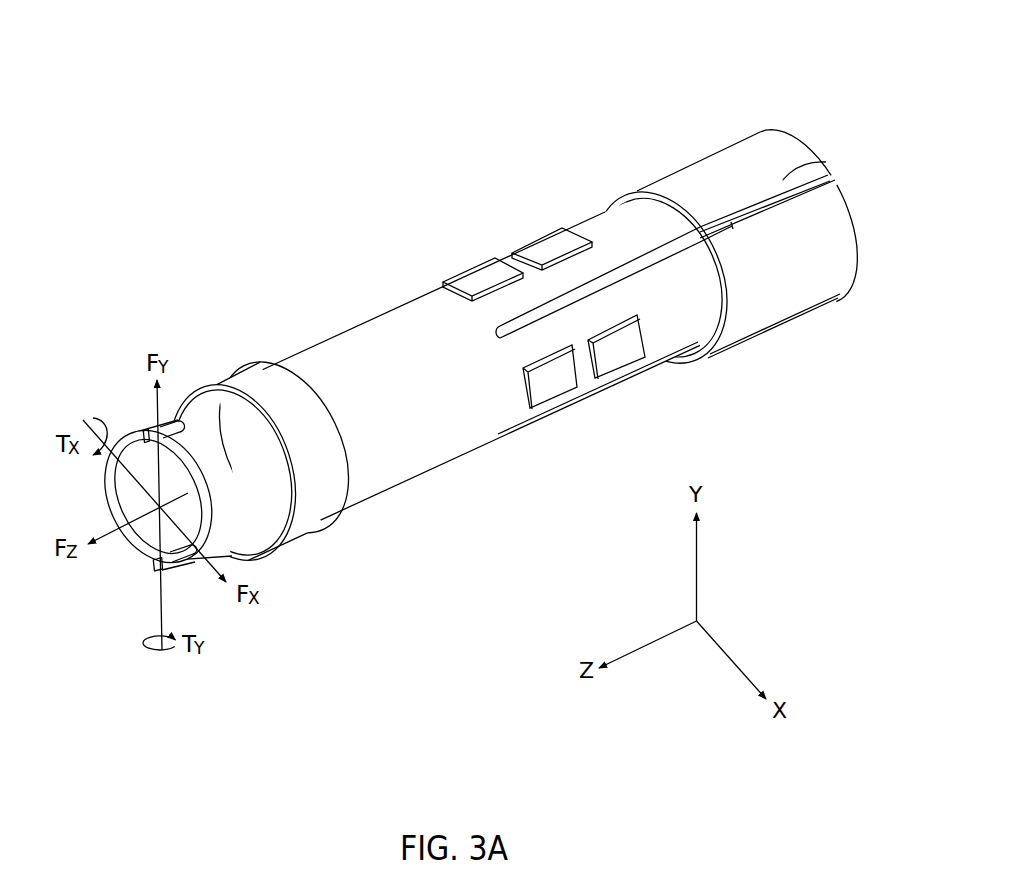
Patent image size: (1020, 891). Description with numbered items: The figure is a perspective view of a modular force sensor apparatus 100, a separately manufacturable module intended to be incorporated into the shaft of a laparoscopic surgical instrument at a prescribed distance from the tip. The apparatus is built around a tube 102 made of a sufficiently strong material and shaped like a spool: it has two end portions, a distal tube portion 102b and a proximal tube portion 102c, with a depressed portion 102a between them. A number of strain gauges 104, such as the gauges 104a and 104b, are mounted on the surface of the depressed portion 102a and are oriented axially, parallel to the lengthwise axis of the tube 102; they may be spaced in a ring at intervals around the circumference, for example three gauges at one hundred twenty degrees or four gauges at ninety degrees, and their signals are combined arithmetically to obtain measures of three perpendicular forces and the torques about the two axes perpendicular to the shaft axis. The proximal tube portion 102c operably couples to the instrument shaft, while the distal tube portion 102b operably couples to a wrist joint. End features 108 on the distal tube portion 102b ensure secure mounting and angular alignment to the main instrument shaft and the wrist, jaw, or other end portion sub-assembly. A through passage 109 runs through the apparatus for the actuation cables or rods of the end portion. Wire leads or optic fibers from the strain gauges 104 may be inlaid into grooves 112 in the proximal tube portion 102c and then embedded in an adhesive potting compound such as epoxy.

The modular force sensor apparatus 100 is at (507, 102).
The tube 102 is at (457, 364).
The depressed portion 102a is at (407, 482).
The distal tube portion 102b is at (316, 530).
The proximal tube portion 102c is at (778, 345).
The strain gauges 104 is at (543, 247).
The strain gauge 104a is at (475, 278).
The strain gauge 104b is at (547, 388).
The end features 108 is at (178, 437).
The through passage 109 is at (120, 488).
The grooves 112 is at (775, 198).